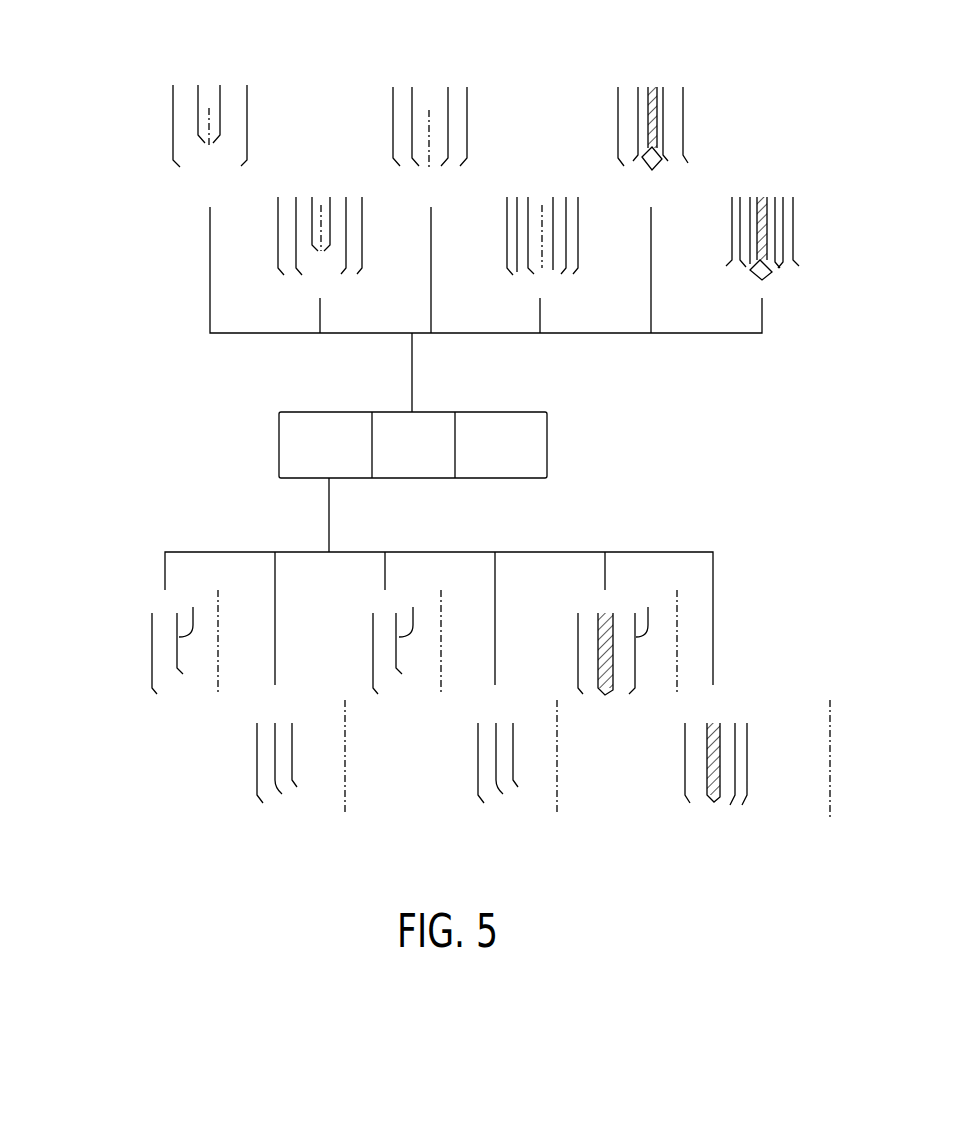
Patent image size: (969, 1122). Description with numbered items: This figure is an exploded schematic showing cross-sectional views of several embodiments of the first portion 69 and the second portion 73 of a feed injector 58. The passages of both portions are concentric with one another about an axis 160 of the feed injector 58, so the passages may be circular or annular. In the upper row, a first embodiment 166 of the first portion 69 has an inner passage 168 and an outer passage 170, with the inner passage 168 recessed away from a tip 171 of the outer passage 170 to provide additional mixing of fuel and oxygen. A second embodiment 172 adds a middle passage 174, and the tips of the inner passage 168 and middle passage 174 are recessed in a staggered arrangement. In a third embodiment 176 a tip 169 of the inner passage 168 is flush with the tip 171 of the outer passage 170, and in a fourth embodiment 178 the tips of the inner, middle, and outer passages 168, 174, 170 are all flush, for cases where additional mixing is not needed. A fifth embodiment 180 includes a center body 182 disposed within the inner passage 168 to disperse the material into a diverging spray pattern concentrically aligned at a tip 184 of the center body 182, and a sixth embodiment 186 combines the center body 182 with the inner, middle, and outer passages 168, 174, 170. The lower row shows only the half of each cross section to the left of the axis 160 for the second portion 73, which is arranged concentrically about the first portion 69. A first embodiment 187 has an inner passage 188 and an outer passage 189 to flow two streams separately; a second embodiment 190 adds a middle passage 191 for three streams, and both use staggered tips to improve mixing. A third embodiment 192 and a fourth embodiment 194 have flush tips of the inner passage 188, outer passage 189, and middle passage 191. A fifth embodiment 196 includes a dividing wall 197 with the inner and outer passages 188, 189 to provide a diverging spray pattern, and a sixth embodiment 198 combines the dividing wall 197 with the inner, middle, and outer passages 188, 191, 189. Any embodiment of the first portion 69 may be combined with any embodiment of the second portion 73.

The feed injector 58 is at (658, 402).
The first portion 69 is at (413, 478).
The second portion 73 is at (331, 412).
The axis 160 is at (209, 117).
The first embodiment 166 is at (262, 116).
The inner passage 168 is at (205, 112).
The tip 169 is at (435, 177).
The outer passage 170 is at (172, 123).
The tip 171 is at (207, 157).
The second embodiment 172 is at (373, 247).
The middle passage 174 is at (297, 230).
The third embodiment 176 is at (480, 116).
The fourth embodiment 178 is at (590, 247).
The fifth embodiment 180 is at (704, 104).
The center body 182 is at (653, 90).
The tip 184 is at (647, 160).
The sixth embodiment 186 is at (807, 229).
The first embodiment 187 is at (144, 706).
The inner passage 188 is at (773, 750).
The outer passage 189 is at (152, 652).
The second embodiment 190 is at (243, 811).
The middle passage 191 is at (293, 782).
The third embodiment 192 is at (365, 688).
The fourth embodiment 194 is at (464, 811).
The fifth embodiment 196 is at (566, 688).
The dividing wall 197 is at (606, 614).
The sixth embodiment 198 is at (670, 811).